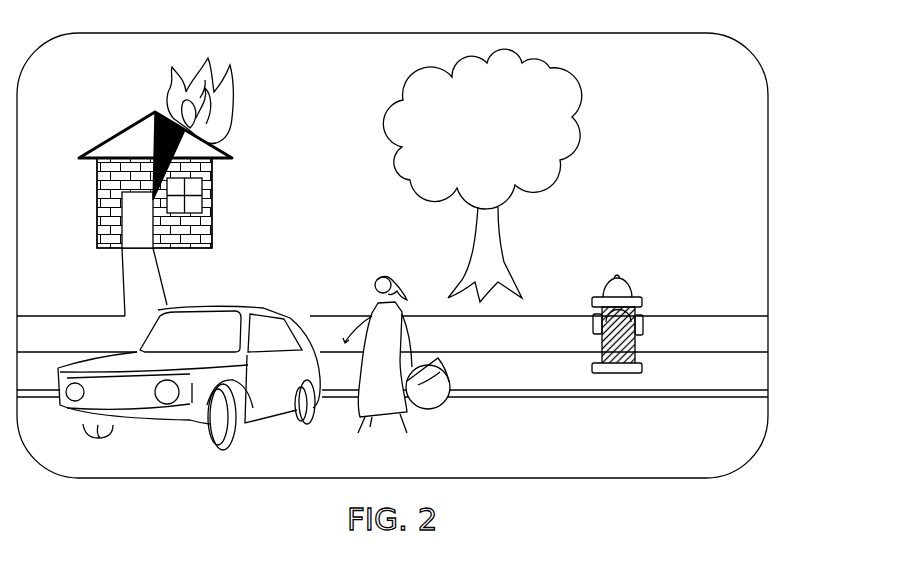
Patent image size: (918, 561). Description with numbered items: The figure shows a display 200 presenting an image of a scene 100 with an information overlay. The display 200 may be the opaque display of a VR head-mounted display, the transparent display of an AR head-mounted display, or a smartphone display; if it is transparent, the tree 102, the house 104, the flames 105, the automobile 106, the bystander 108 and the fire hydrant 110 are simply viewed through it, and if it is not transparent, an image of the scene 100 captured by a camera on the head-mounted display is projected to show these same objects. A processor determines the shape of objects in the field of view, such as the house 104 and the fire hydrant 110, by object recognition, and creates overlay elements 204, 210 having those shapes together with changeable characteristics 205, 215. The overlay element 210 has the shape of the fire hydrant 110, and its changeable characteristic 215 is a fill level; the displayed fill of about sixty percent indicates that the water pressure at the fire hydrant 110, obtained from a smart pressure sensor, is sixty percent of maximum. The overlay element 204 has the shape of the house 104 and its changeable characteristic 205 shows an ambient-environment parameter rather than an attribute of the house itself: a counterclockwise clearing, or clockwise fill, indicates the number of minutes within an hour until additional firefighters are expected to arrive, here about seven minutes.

The scene 100 is at (670, 120).
The tree 102 is at (508, 137).
The house 104 is at (223, 142).
The flames 105 is at (218, 88).
The automobile 106 is at (213, 342).
The bystander 108 is at (375, 279).
The fire hydrant 110 is at (654, 348).
The display 200 is at (767, 90).
The overlay element 204 is at (117, 135).
The changeable characteristic 205 is at (155, 128).
The overlay element 210 is at (640, 372).
The changeable characteristic 215 is at (643, 337).